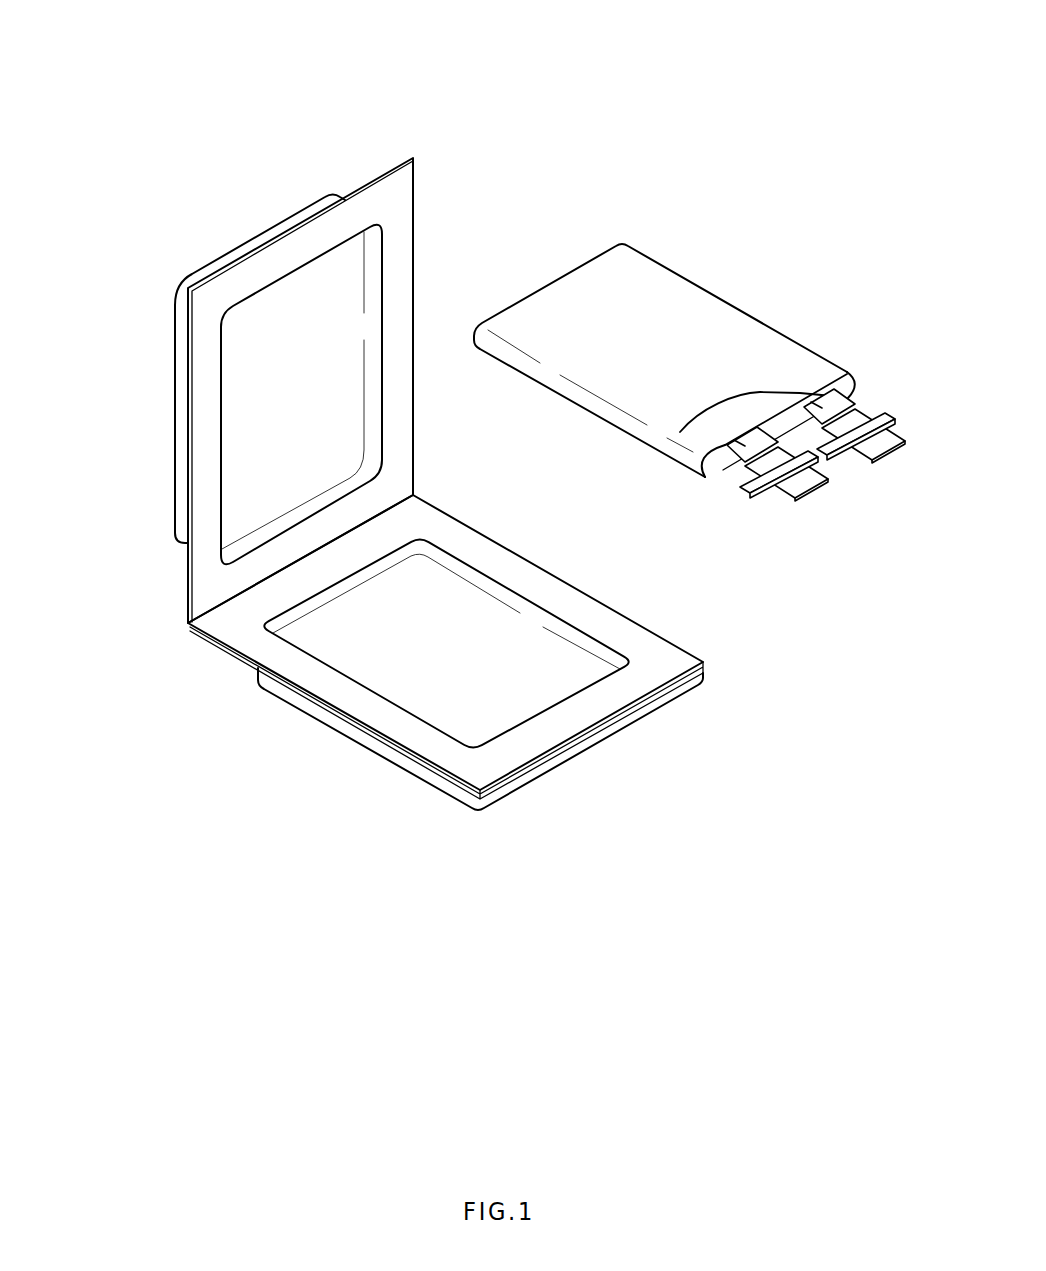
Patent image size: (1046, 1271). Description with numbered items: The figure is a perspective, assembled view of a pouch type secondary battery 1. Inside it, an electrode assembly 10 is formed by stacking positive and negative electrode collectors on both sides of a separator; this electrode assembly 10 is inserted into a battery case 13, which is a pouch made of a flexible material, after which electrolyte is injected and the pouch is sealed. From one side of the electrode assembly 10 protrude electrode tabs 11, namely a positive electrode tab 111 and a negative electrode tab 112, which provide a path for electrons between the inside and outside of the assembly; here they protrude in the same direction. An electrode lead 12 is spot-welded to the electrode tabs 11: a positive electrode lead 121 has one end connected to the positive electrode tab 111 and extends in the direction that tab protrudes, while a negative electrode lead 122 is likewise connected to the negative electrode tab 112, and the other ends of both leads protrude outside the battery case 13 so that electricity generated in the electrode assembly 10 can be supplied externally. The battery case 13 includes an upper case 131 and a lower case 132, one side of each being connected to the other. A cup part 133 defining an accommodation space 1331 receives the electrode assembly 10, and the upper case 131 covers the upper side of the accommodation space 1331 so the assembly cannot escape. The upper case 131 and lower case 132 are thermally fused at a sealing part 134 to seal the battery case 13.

The pouch type secondary battery 1 is at (580, 81).
The electrode assembly 10 is at (836, 257).
The electrode tab 11 is at (592, 488).
The positive electrode tab 111 is at (637, 438).
The negative electrode tab 112 is at (692, 450).
The electrode lead 12 is at (950, 500).
The positive electrode lead 121 is at (883, 452).
The negative electrode lead 122 is at (812, 487).
The battery case 13 is at (102, 317).
The upper case 131 is at (180, 328).
The lower case 132 is at (215, 647).
The cup part 133 is at (363, 740).
The accommodation space 1331 is at (508, 717).
The sealing part 134 is at (663, 677).